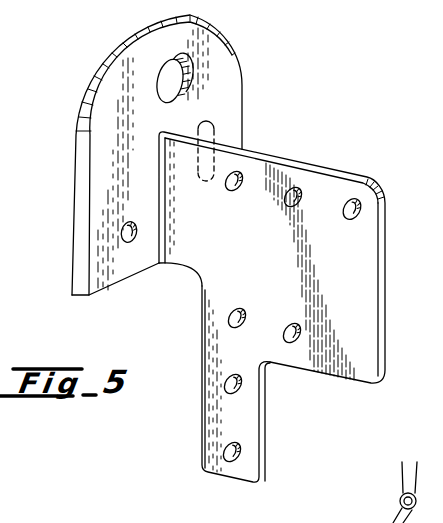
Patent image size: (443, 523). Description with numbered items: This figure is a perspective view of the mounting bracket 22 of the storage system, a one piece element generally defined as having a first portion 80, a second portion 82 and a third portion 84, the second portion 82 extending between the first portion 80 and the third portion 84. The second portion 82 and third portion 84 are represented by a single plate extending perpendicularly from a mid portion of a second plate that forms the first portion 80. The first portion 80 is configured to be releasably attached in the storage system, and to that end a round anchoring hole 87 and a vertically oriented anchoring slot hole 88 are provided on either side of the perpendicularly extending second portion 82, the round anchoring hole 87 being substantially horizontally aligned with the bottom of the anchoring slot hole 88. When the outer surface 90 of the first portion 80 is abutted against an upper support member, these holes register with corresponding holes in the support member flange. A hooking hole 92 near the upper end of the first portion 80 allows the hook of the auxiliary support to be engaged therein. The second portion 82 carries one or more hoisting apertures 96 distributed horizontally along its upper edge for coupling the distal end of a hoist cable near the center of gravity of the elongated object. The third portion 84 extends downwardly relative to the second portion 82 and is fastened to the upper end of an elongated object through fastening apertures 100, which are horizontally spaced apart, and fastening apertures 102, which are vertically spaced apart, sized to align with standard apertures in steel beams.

The mounting bracket 22 is at (248, 106).
The first portion 80 is at (103, 172).
The second portion 82 is at (368, 280).
The third portion 84 is at (245, 421).
The round anchoring hole 87 is at (129, 243).
The anchoring slot hole 88 is at (176, 128).
The outer surface 90 is at (122, 41).
The hooking hole 92 is at (181, 90).
The hoisting apertures 96 is at (352, 198).
The fastening apertures 100 is at (231, 324).
The fastening apertures 102 is at (228, 391).